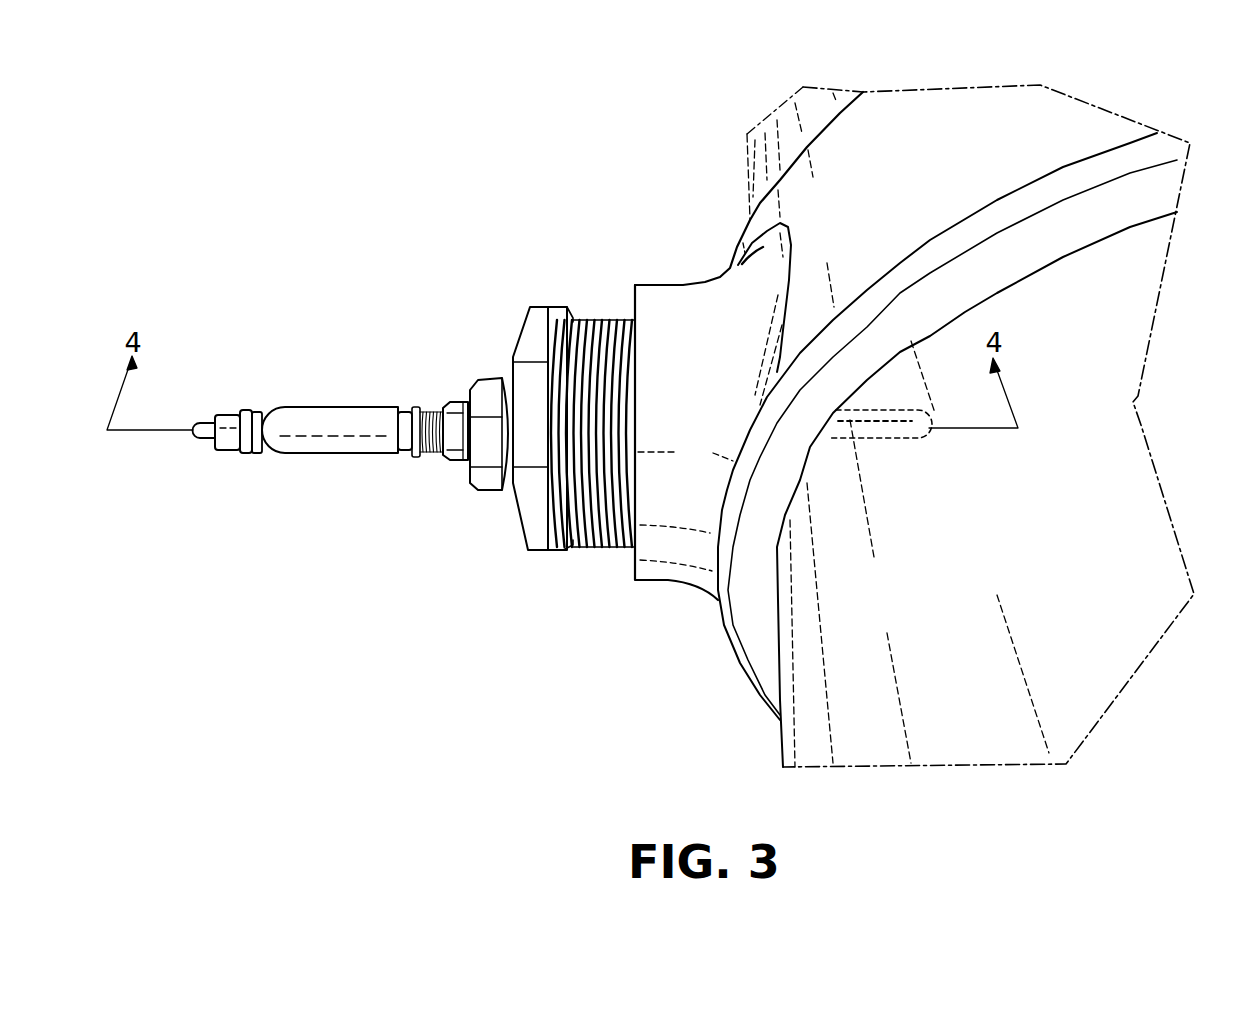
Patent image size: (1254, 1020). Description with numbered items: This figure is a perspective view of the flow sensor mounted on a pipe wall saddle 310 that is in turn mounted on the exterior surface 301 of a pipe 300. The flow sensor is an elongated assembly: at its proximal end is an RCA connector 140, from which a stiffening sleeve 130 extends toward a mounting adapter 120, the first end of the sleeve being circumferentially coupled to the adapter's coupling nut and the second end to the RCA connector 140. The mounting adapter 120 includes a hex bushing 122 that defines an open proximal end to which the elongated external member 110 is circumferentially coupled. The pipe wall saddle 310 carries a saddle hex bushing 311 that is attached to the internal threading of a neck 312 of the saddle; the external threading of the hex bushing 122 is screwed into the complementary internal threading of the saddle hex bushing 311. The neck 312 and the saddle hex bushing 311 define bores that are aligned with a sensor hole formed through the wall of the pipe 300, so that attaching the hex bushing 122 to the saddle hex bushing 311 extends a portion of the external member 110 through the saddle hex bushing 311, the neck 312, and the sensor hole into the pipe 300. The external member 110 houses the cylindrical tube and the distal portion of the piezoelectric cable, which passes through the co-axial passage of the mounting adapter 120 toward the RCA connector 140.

The external member 110 is at (881, 437).
The mounting adapter 120 is at (456, 478).
The hex bushing 122 is at (490, 378).
The stiffening sleeve 130 is at (328, 407).
The RCA connector 140 is at (228, 410).
The pipe 300 is at (1112, 628).
The exterior surface 301 is at (1041, 413).
The pipe wall saddle 310 is at (689, 307).
The saddle hex bushing 311 is at (547, 558).
The neck 312 is at (667, 572).